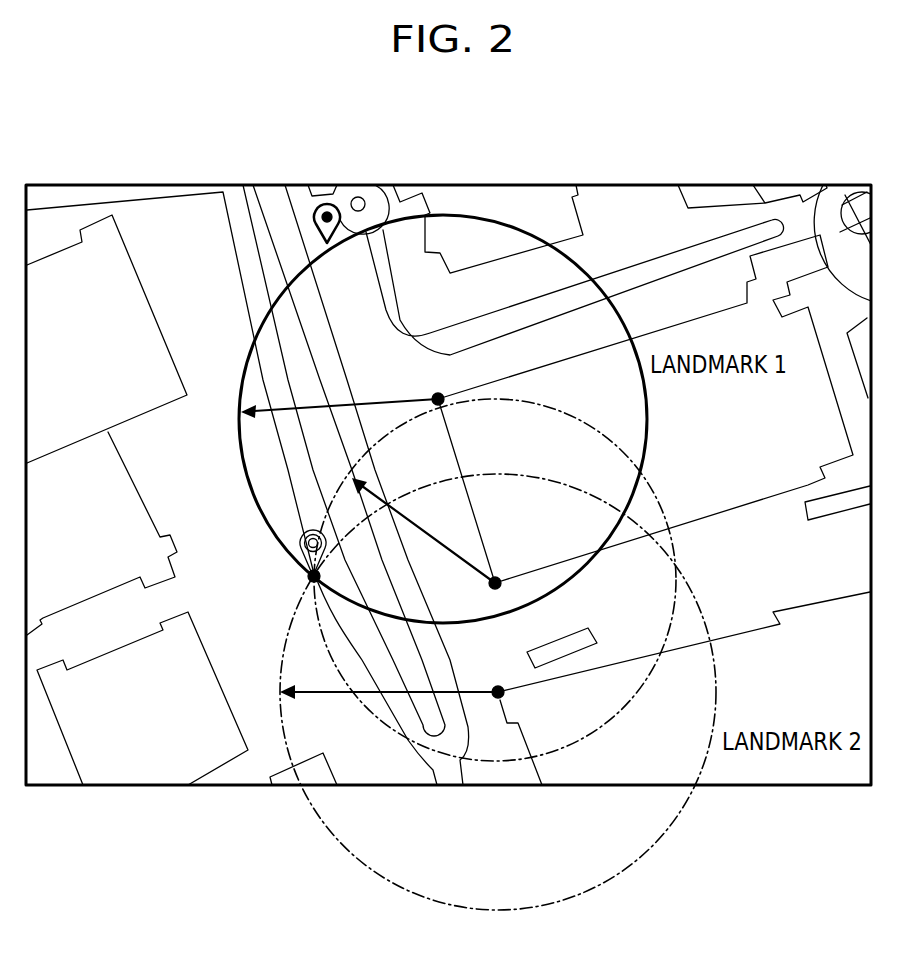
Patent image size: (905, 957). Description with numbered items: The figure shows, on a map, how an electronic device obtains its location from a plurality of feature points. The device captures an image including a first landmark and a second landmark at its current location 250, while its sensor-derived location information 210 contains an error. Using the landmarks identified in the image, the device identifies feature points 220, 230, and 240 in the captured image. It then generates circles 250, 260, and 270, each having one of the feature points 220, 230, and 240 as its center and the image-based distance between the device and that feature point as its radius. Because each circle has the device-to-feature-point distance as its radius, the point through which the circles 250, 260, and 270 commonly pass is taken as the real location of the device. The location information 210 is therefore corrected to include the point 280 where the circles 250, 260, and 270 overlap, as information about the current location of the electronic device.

The location information 210 is at (338, 208).
The feature point 220 is at (444, 392).
The feature point 230 is at (500, 573).
The feature point 240 is at (495, 686).
The circle 250 is at (645, 420).
The circle 260 is at (674, 548).
The circle 270 is at (715, 690).
The point 280 is at (307, 578).